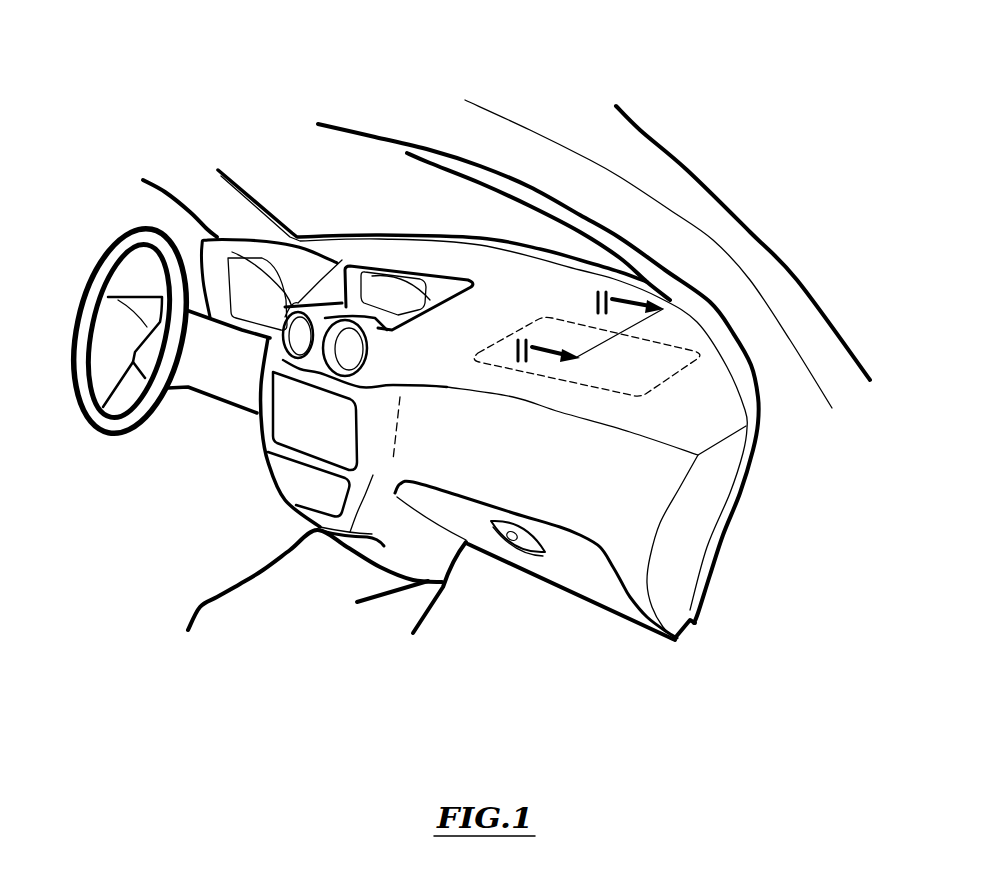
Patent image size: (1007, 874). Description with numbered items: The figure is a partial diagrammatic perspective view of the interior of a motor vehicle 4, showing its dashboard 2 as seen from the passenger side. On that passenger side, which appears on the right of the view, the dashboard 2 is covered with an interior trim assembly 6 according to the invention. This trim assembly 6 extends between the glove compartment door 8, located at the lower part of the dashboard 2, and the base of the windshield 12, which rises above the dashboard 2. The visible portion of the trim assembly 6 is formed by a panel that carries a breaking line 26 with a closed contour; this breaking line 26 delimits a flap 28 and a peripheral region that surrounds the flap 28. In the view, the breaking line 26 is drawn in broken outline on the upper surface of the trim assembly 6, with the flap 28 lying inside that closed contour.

The dashboard 2 is at (609, 661).
The motor vehicle 4 is at (681, 134).
The interior trim assembly 6 is at (632, 482).
The glove compartment door 8 is at (567, 567).
The windshield 12 is at (378, 192).
The breaking line 26 is at (650, 386).
The flap 28 is at (612, 363).